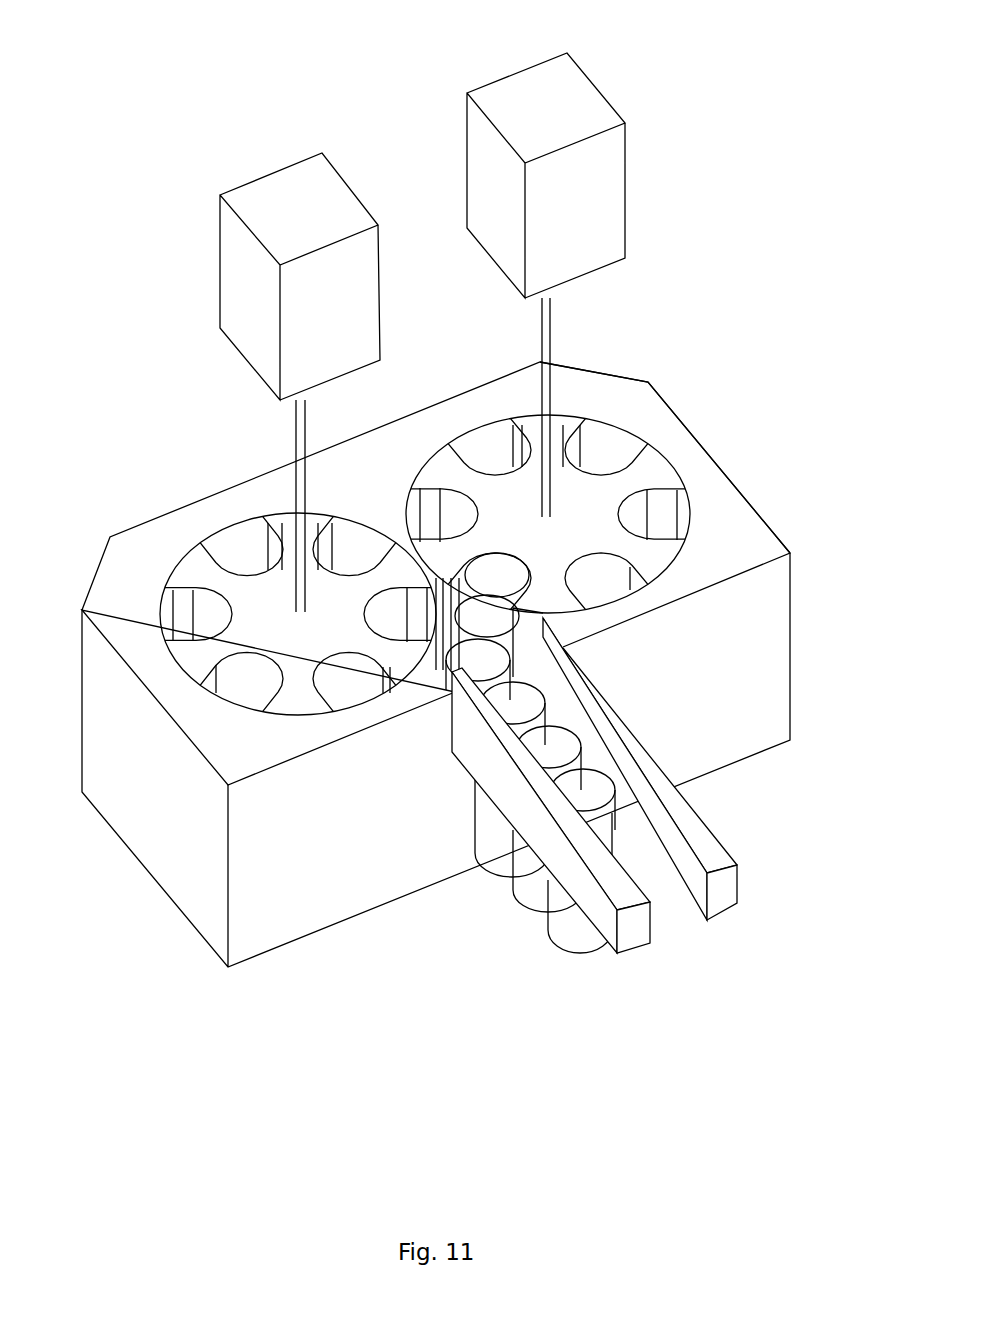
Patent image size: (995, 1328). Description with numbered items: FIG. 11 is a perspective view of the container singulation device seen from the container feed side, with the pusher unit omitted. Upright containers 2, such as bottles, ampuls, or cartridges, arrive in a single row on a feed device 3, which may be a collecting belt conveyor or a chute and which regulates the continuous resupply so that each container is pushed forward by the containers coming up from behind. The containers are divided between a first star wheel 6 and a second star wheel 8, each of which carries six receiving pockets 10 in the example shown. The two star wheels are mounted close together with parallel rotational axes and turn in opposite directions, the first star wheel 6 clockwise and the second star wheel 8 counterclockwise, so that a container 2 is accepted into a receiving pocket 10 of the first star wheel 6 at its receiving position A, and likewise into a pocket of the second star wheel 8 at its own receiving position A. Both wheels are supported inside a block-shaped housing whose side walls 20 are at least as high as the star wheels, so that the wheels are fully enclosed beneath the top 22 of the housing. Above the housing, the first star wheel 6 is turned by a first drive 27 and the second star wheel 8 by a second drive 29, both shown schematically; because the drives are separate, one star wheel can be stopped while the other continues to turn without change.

The containers 2 is at (530, 872).
The feed device 3 is at (705, 845).
The first star wheel 6 is at (582, 518).
The second star wheel 8 is at (265, 620).
The receiving pockets 10 is at (247, 557).
The side walls 20 is at (182, 889).
The top 22 is at (620, 400).
The first drive 27 is at (502, 182).
The second drive 29 is at (253, 280).
The receiving position A is at (510, 566).